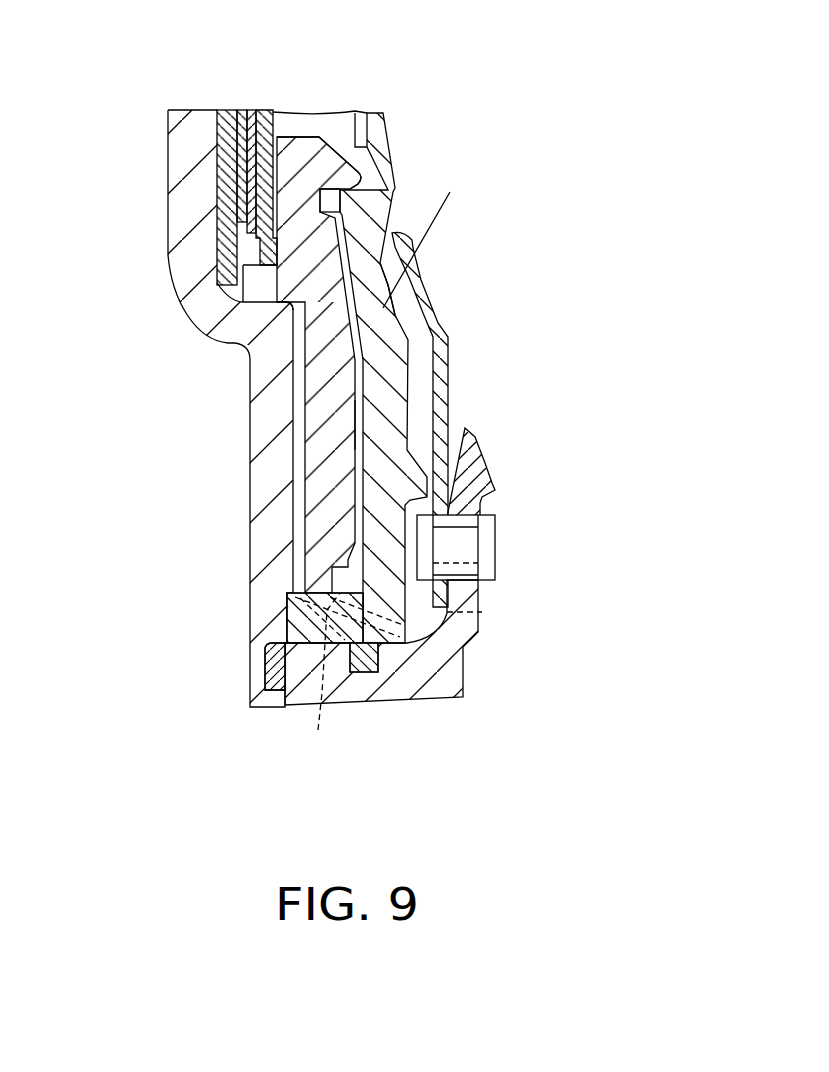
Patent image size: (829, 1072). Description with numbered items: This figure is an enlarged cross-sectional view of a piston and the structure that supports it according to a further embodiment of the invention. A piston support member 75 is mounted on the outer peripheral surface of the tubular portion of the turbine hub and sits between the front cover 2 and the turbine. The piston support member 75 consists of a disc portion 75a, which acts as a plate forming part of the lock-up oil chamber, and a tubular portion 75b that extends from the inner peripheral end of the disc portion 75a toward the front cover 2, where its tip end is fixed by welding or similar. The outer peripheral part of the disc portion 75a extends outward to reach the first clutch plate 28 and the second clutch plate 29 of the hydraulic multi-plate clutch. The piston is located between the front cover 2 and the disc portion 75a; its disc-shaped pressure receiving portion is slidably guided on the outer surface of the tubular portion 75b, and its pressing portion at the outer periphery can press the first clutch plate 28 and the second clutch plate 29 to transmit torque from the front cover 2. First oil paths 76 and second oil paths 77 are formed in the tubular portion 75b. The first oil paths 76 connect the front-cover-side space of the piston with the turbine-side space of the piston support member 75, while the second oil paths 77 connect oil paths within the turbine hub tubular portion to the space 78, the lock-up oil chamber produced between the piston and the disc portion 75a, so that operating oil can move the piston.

The front cover 2 is at (268, 413).
The first clutch plate 28 is at (268, 122).
The second clutch plate 29 is at (247, 150).
The piston support member 75 is at (418, 382).
The disc portion 75a is at (380, 310).
The tubular portion 75b is at (307, 613).
The first oil paths 76 is at (318, 733).
The second oil paths 77 is at (420, 575).
The space (lock-up oil chamber) 78 is at (353, 425).